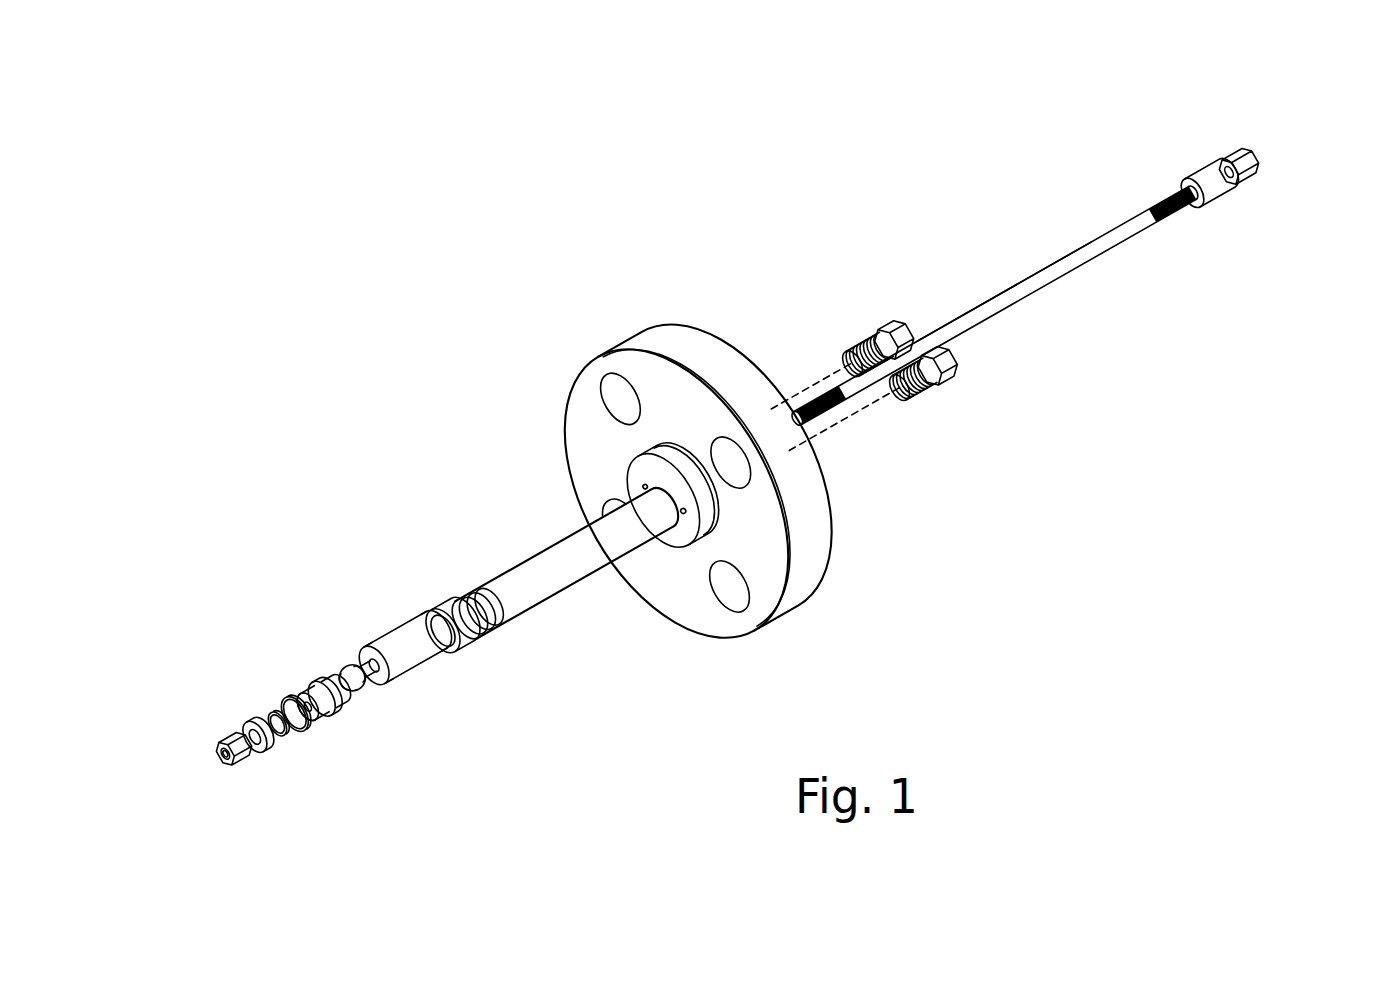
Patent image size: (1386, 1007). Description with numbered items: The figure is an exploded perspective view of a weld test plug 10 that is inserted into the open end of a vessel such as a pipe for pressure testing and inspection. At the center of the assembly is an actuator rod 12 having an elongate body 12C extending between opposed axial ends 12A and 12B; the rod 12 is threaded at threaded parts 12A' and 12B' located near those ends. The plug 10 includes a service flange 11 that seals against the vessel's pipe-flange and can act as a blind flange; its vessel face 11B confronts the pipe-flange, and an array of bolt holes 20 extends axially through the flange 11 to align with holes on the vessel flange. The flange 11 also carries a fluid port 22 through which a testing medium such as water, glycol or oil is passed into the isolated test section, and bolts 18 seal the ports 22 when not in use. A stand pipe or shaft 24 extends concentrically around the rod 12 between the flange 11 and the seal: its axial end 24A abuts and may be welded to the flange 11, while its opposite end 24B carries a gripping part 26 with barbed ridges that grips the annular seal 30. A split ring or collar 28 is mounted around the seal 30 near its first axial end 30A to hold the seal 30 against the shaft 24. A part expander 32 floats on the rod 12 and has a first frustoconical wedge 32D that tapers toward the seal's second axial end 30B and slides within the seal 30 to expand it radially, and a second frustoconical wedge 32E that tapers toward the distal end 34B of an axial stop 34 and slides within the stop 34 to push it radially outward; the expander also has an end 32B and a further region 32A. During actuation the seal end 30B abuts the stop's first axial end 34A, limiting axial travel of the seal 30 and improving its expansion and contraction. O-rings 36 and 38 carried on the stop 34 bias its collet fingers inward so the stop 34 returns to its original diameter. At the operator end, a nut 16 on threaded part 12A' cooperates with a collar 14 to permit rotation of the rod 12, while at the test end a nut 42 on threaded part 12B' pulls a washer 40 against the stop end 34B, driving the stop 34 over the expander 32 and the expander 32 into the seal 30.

The weld test plug 10 is at (256, 195).
The service flange 11 is at (581, 380).
The vessel face 11B is at (719, 469).
The actuator rod 12 is at (1043, 272).
The rod end 12A is at (1278, 216).
The threaded part 12A' is at (1191, 253).
The rod end 12B is at (878, 410).
The threaded part 12B' is at (916, 409).
The elongate body 12C is at (1000, 317).
The collar 14 is at (1205, 185).
The nut 16 is at (1235, 160).
The bolts 18 is at (890, 333).
The bolt holes 20 is at (752, 490).
The fluid port 22 is at (685, 510).
The shaft 24 is at (557, 587).
The axial end 24A is at (645, 487).
The end 24B is at (468, 588).
The gripping part 26 is at (502, 622).
The collar 28 is at (470, 643).
The annular seal 30 is at (432, 657).
The first axial end 30A is at (480, 642).
The second axial end 30B is at (413, 672).
The part expander 32 is at (360, 700).
The ball first face 32A is at (360, 672).
The end 32B is at (343, 673).
The first frustoconical wedge 32D is at (380, 690).
The second frustoconical wedge 32E is at (357, 707).
The axial stop 34 is at (327, 715).
The first axial end 34A is at (335, 677).
The second axial end 34B is at (303, 697).
The O-ring 36 is at (303, 728).
The O-ring 38 is at (280, 737).
The washer 40 is at (253, 722).
The nut 42 is at (225, 742).